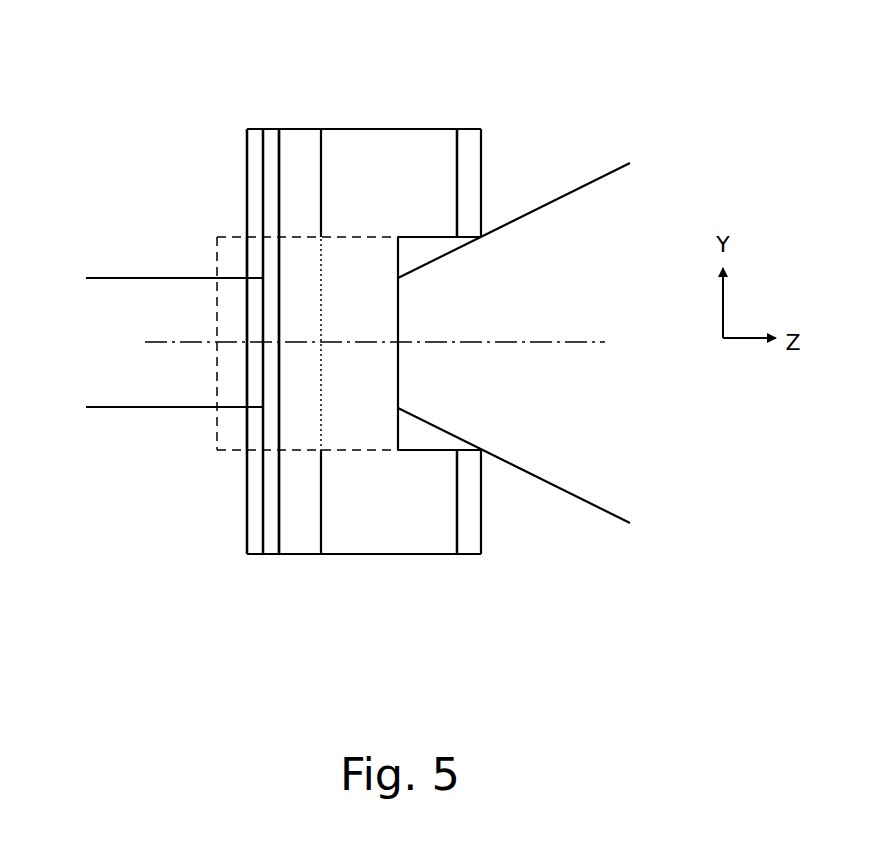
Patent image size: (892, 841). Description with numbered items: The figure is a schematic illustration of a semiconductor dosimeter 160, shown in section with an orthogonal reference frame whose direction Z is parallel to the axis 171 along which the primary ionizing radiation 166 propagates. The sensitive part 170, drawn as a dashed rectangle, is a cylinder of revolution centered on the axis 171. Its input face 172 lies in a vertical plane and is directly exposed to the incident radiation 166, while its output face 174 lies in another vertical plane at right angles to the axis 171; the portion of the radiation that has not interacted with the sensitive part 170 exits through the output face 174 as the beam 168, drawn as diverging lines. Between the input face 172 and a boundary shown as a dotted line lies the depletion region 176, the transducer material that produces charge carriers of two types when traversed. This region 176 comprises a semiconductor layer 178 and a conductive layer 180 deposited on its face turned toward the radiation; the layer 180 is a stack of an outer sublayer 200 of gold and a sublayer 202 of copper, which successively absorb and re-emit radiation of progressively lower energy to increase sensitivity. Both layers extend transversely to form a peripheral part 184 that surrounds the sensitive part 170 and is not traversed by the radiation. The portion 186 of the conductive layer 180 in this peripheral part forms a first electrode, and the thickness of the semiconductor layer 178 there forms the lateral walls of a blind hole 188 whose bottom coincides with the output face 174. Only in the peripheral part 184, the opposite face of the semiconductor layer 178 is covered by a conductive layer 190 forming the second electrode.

The dosimeter 160 is at (177, 88).
The primary ionizing radiation 166 is at (115, 278).
The beam 168 is at (597, 177).
The sensitive part 170 is at (233, 233).
The axis 171 is at (552, 340).
The input face 172 is at (244, 438).
The output face 174 is at (400, 390).
The depletion region 176 is at (292, 355).
The semiconductor layer 178 is at (278, 123).
The conductive layer 180 is at (305, 666).
The peripheral part 184 is at (443, 160).
The portion of the conductive layer 186 is at (246, 142).
The blind hole 188 is at (435, 238).
The conductive layer 190 is at (470, 158).
The sublayer of gold 200 is at (256, 545).
The sublayer of copper 202 is at (271, 545).